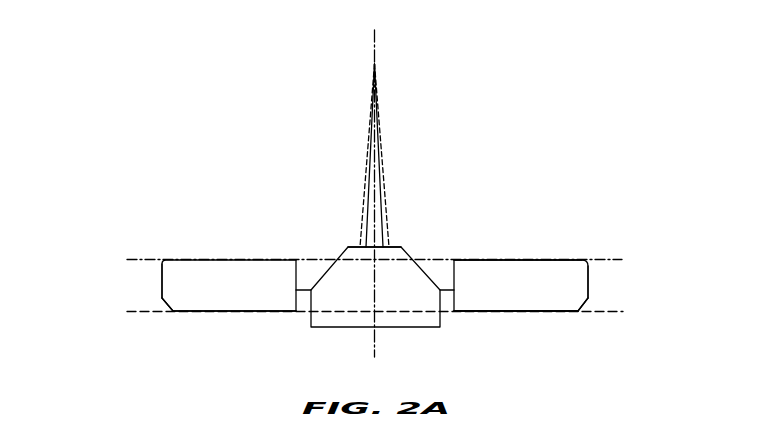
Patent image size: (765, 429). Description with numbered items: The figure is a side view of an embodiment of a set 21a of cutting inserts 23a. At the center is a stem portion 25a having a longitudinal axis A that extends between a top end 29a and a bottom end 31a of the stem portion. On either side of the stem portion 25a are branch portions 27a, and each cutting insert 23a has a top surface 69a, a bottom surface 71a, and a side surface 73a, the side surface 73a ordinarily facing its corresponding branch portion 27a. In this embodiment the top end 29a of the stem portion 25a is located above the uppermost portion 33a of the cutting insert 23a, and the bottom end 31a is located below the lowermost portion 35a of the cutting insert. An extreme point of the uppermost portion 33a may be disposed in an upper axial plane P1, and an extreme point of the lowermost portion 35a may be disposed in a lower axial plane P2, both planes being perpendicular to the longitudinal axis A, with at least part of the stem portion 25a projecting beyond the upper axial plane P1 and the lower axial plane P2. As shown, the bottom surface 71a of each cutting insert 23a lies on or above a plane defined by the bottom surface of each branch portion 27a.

The set of cutting inserts 21a is at (160, 118).
The cutting insert 23a is at (142, 299).
The stem portion 25a is at (406, 240).
The branch portion 27a is at (306, 262).
The top end 29a is at (386, 182).
The bottom end 31a is at (410, 328).
The uppermost portion 33a is at (570, 259).
The lowermost portion 35a is at (570, 312).
The top surface 69a is at (222, 260).
The bottom surface 71a is at (202, 312).
The side surface 73a is at (160, 282).
The longitudinal axis A is at (364, 147).
The upper axial plane P1 is at (615, 254).
The lower axial plane P2 is at (597, 312).